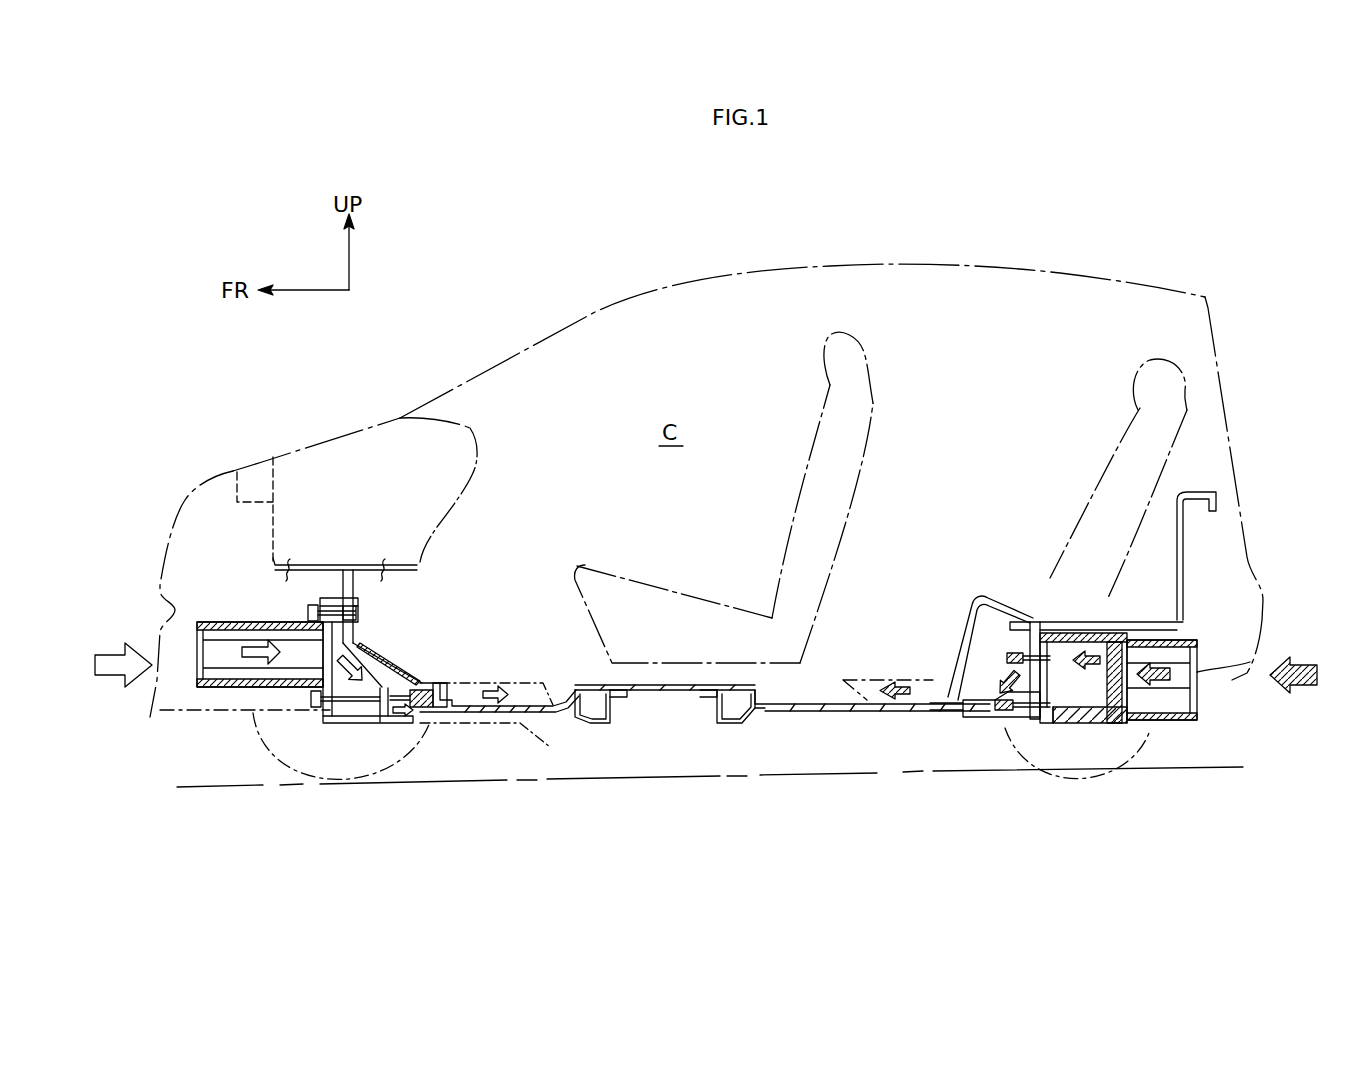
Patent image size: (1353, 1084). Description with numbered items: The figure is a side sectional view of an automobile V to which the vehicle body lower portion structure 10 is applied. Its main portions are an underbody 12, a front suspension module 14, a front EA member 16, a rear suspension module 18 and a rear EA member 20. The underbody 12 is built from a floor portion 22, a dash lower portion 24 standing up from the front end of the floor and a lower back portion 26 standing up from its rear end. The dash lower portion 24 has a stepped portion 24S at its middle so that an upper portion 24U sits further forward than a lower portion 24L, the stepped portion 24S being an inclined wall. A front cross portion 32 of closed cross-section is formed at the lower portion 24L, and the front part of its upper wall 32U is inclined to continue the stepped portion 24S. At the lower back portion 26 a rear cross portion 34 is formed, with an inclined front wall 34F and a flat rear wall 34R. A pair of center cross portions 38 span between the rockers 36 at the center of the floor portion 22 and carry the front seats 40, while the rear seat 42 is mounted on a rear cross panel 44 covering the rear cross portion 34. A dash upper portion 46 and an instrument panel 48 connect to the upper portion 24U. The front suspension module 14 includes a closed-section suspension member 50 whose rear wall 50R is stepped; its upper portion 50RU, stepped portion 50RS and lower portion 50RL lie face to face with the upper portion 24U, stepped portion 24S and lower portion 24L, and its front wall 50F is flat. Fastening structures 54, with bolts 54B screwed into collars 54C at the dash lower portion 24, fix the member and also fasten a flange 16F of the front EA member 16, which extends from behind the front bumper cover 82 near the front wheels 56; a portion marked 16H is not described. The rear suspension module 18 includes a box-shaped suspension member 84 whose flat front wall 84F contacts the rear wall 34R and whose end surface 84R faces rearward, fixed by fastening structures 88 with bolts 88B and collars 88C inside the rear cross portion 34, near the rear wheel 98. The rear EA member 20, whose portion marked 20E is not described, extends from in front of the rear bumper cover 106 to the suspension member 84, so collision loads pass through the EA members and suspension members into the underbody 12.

The automobile V is at (1019, 269).
The vehicle body lower portion structure 10 is at (782, 776).
The underbody 12 is at (845, 722).
The front suspension module 14 is at (403, 746).
The front energy absorbing member 16 is at (201, 739).
The horizontal portion of front side member 16H is at (190, 652).
The flange 16F is at (333, 565).
The rear suspension module 18 is at (1068, 748).
The rear energy absorbing member 20 is at (1208, 691).
The rear end of crash box 20E is at (1197, 686).
The floor portion 22 is at (813, 705).
The dash lower portion 24 is at (505, 625).
The upper portion 24U is at (365, 595).
The stepped portion 24S is at (378, 633).
The lower portion 24L is at (398, 655).
The lower back portion 26 is at (962, 664).
The front cross portion 32 is at (499, 691).
The upper wall 32U is at (438, 685).
The rear cross portion 34 is at (962, 705).
The front wall 34F is at (917, 620).
The rear wall 34R is at (1017, 708).
The rockers 36 is at (900, 737).
The center cross portions 38 is at (655, 746).
The front seats 40 is at (708, 580).
The rear seat 42 is at (1119, 442).
The rear cross panel 44 is at (1176, 612).
The dash upper portion 46 is at (298, 562).
The instrument panel 48 is at (480, 437).
The suspension member 50 is at (403, 746).
The front wall 50F is at (310, 640).
The rear wall 50R is at (436, 746).
The upper portion 50RU is at (338, 722).
The stepped portion 50RS is at (350, 722).
The lower portion 50RL is at (365, 722).
The fastening structures 54 is at (309, 594).
The bolts 54B is at (308, 607).
The collars 54C is at (374, 566).
The front wheels 56 is at (253, 713).
The front bumper cover 82 is at (157, 712).
The suspension member 84 is at (1126, 681).
The front wall 84F is at (1044, 635).
The end surface 84R is at (1127, 732).
The fastening structures 88 is at (1027, 630).
The bolts 88B is at (1046, 633).
The collars 88C is at (1010, 620).
The rear wheel 98 is at (1047, 750).
The rear bumper cover 106 is at (1258, 648).